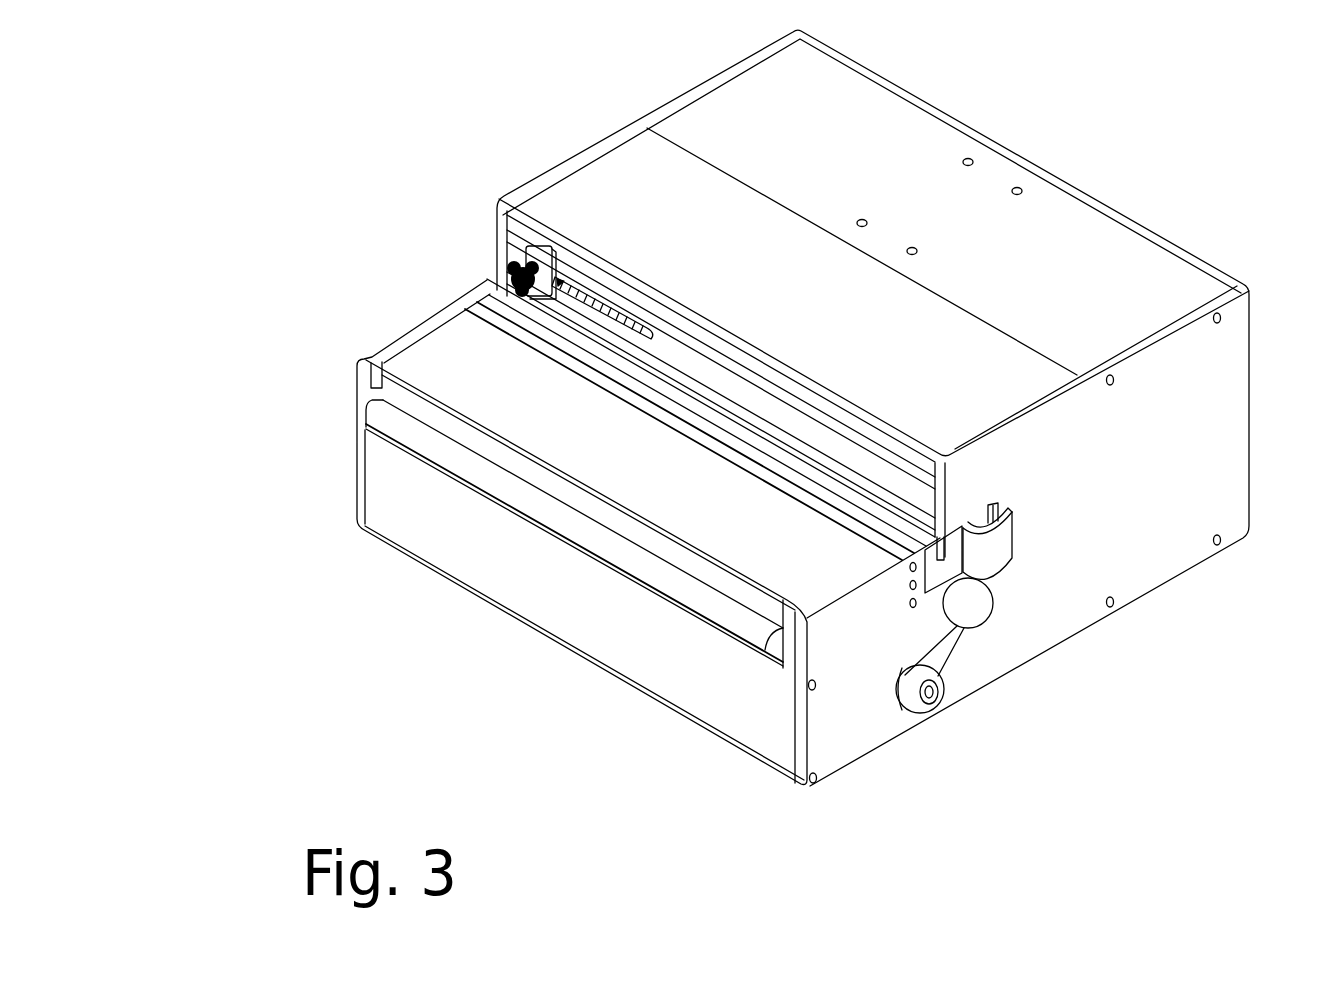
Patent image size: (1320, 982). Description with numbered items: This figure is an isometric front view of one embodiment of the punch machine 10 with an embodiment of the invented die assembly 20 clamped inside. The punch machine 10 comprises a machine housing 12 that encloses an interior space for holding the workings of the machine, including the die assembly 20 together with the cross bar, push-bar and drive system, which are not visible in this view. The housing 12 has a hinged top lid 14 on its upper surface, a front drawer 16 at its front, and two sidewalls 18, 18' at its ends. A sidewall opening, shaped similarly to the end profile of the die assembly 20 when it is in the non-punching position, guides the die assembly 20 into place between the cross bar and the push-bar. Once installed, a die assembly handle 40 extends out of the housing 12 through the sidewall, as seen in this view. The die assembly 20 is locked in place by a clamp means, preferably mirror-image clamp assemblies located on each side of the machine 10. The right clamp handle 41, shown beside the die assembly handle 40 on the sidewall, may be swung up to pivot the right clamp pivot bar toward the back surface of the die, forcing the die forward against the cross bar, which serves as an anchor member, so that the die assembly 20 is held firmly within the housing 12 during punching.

The punch machine 10 is at (1050, 115).
The machine housing 12 is at (1097, 645).
The hinged top lid 14 is at (620, 183).
The front drawer 16 is at (455, 360).
The sidewall 18 is at (872, 233).
The sidewall 18' is at (1202, 469).
The die assembly 20 is at (955, 548).
The die assembly handle 40 is at (997, 550).
The right clamp handle 41 is at (963, 612).